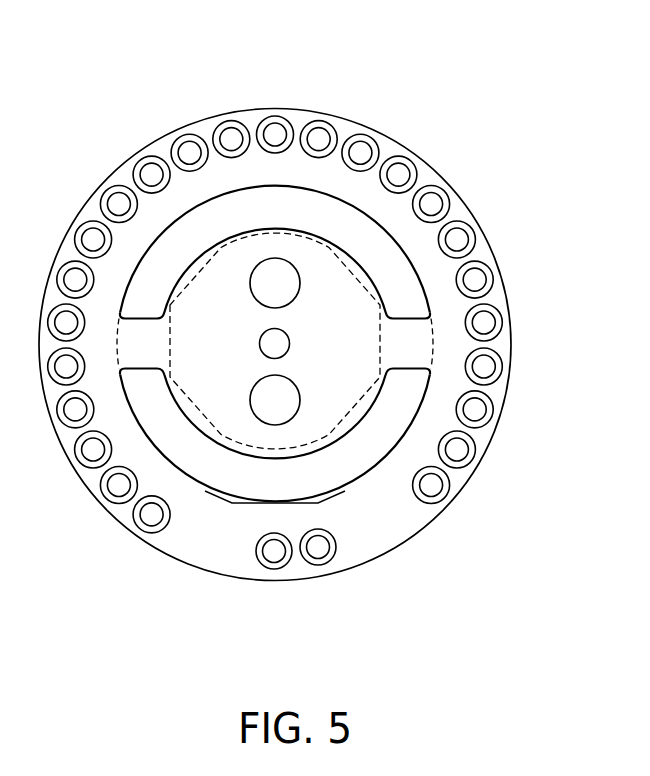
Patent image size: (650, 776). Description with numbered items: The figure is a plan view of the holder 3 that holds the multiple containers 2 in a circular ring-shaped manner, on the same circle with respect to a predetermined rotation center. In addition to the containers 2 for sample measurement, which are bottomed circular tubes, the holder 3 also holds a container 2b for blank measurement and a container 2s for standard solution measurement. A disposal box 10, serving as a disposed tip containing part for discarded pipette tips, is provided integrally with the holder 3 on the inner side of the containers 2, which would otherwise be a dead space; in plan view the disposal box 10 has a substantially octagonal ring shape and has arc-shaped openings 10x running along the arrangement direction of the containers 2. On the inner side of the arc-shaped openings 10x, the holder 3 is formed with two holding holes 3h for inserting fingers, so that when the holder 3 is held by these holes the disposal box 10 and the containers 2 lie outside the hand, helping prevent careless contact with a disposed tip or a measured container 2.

The container 2 is at (450, 185).
The holder 3 is at (272, 107).
The holding hole 3h is at (299, 282).
The disposal box 10 is at (245, 345).
The arc-shaped opening 10x is at (223, 192).
The container for standard solution measurement 2s is at (275, 570).
The container for blank measurement 2b is at (320, 566).